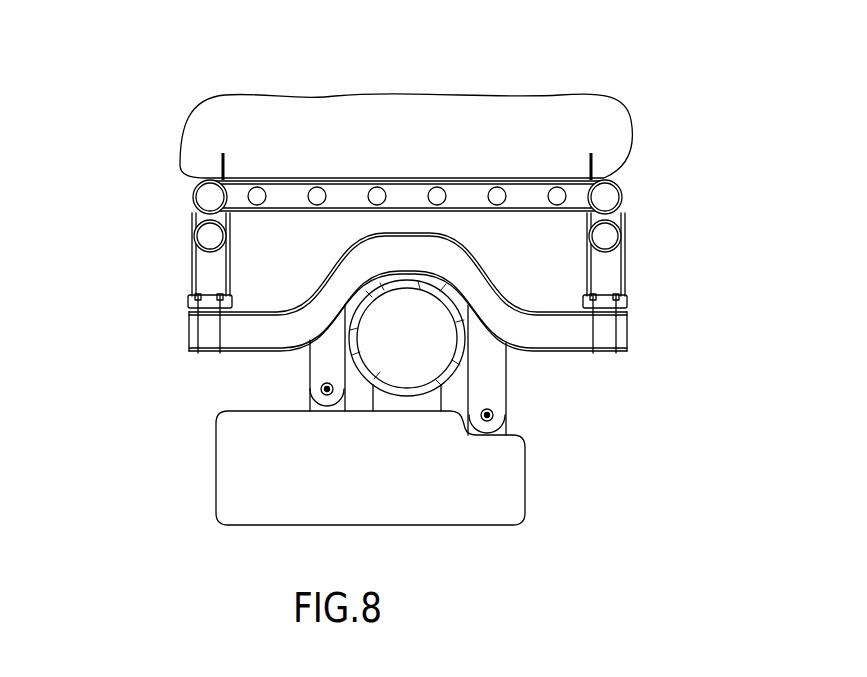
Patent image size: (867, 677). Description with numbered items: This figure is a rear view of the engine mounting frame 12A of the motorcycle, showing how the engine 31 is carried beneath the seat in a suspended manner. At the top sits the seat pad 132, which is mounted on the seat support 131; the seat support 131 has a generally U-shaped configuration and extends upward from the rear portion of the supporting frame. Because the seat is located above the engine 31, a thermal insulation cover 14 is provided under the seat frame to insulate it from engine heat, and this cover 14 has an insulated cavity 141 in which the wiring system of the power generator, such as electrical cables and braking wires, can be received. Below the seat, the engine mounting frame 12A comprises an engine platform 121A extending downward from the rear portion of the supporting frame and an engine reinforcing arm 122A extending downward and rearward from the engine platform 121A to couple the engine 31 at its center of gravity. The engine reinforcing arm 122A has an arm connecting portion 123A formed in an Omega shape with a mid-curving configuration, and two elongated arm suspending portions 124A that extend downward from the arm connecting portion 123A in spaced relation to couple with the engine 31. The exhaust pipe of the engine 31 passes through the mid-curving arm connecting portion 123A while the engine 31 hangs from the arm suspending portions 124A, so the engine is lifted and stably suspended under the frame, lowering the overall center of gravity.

The seat pad 132 is at (385, 130).
The thermal insulation cover 14 is at (451, 130).
The insulated cavity 141 is at (522, 196).
The seat support 131 is at (193, 200).
The engine platform 121A is at (193, 275).
The engine mounting frame 12A is at (398, 279).
The engine reinforcing arm 122A is at (466, 347).
The arm connecting portion 123A is at (557, 351).
The arm suspending portions 124A is at (318, 353).
The engine 31 is at (398, 481).